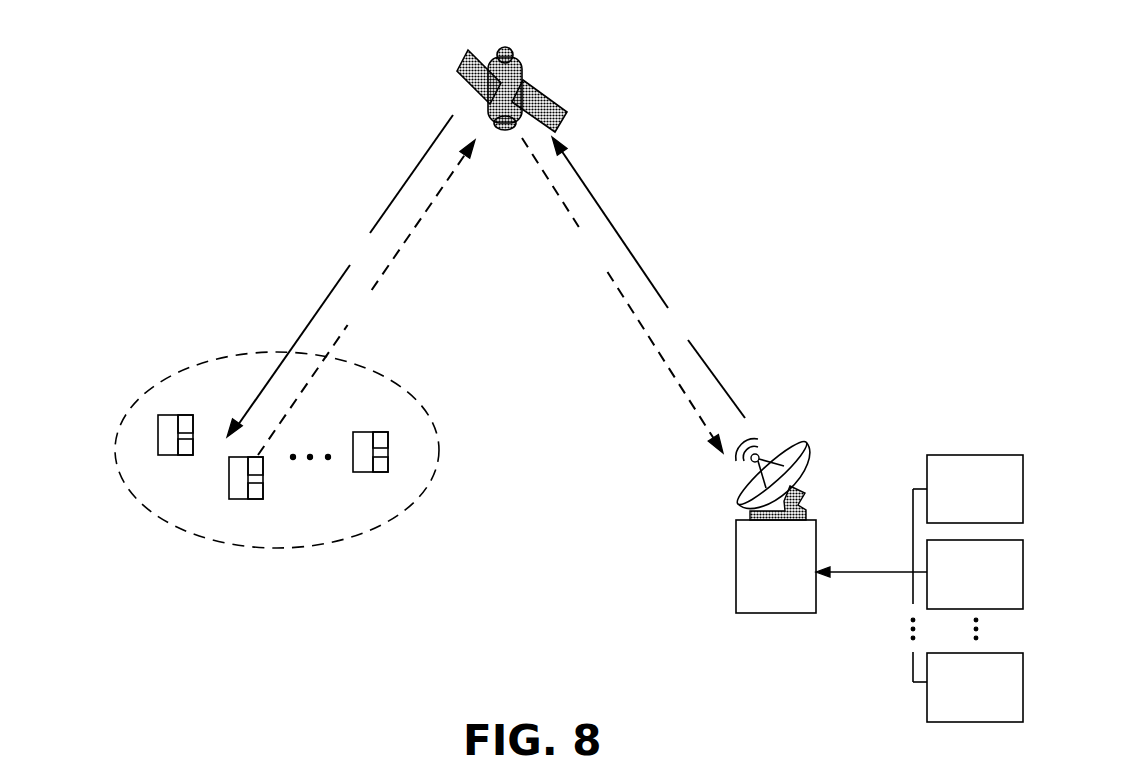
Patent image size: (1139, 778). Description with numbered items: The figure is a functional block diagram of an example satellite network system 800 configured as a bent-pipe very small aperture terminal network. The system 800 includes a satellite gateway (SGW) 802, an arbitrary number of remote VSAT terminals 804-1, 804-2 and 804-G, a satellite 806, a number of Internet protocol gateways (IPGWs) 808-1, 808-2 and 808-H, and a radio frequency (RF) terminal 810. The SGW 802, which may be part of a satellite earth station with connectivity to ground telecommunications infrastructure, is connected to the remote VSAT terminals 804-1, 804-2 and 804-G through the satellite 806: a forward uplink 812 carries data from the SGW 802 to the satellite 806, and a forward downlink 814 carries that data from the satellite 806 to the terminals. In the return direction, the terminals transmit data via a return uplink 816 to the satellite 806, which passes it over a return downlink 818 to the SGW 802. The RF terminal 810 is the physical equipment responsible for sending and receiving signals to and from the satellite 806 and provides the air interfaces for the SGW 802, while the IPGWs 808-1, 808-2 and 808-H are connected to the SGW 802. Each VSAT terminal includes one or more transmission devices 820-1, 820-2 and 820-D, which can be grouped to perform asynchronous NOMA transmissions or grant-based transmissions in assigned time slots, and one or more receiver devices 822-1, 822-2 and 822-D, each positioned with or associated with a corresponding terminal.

The satellite network system 800 is at (1018, 61).
The satellite gateway (SGW) 802 is at (754, 595).
The remote VSAT terminal 804-1 is at (158, 435).
The remote VSAT terminal 804-2 is at (240, 500).
The remote VSAT terminal 804-G is at (362, 472).
The satellite 806 is at (523, 80).
The Internet protocol gateway (IPGW) 808-1 is at (945, 515).
The Internet protocol gateway (IPGW) 808-2 is at (945, 600).
The Internet protocol gateway (IPGW) 808-H is at (945, 713).
The radio frequency (RF) terminal 810 is at (712, 486).
The forward uplink 812 is at (648, 277).
The forward downlink 814 is at (340, 276).
The return uplink 816 is at (366, 297).
The return downlink 818 is at (622, 295).
The transmission device 820-1 is at (185, 427).
The transmission device 820-2 is at (255, 468).
The transmission device 820-D is at (383, 438).
The receiver device 822-1 is at (182, 452).
The receiver device 822-2 is at (263, 500).
The receiver device 822-D is at (383, 465).